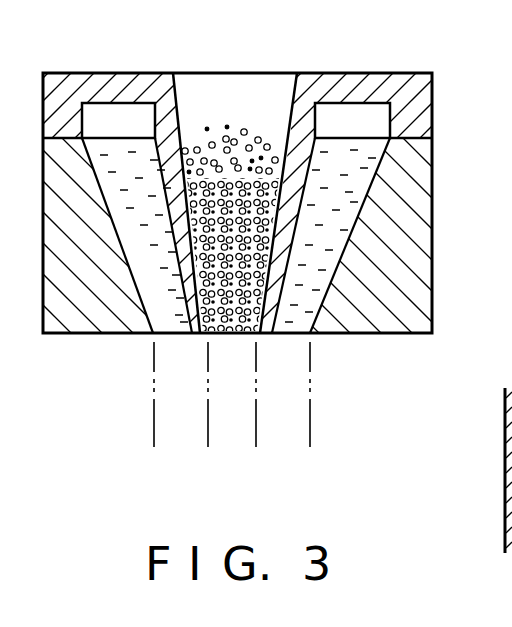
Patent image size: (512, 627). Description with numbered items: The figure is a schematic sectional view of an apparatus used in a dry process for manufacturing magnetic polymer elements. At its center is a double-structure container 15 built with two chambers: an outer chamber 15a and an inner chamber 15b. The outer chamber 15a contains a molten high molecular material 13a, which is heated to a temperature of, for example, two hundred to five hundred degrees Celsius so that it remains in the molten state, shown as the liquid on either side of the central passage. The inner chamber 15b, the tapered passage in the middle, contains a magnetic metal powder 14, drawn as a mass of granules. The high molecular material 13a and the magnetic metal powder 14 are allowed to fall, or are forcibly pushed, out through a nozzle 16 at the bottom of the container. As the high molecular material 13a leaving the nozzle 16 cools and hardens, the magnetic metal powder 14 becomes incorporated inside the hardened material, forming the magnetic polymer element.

The molten high molecular material 13a is at (327, 260).
The magnetic metal powder 14 is at (266, 133).
The double-structure container 15 is at (433, 198).
The outer chamber 15a is at (372, 190).
The inner chamber 15b is at (176, 91).
The nozzle 16 is at (322, 354).